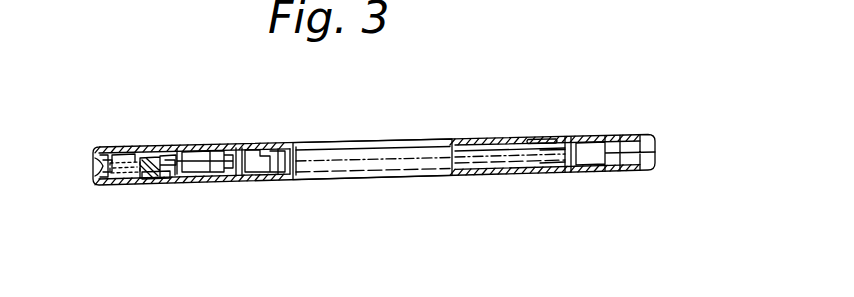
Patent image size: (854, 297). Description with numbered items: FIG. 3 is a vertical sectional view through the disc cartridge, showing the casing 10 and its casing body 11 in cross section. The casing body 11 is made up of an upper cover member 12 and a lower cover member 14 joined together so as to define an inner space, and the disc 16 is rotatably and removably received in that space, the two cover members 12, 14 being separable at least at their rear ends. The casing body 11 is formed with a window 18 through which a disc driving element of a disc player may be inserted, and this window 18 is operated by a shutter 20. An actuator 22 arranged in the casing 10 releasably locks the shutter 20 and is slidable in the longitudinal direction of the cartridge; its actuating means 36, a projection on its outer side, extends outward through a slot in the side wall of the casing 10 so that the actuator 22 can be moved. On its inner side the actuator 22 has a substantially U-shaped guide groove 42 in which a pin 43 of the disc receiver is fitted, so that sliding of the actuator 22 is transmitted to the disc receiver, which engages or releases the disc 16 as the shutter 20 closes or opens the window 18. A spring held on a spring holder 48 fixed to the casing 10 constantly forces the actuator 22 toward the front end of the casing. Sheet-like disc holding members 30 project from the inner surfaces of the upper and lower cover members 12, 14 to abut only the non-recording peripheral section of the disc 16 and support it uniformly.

The casing 10 is at (688, 104).
The casing body 11 is at (313, 179).
The upper cover member 12 is at (202, 145).
The lower cover member 14 is at (198, 182).
The disc 16 is at (400, 164).
The window 18 is at (385, 143).
The shutter 20 is at (413, 140).
The actuator 22 is at (150, 183).
The disc holding member 30 is at (542, 133).
The actuating means 36 is at (93, 167).
The guide groove 42 is at (140, 148).
The pin 43 is at (162, 148).
The spring holder 48 is at (239, 150).